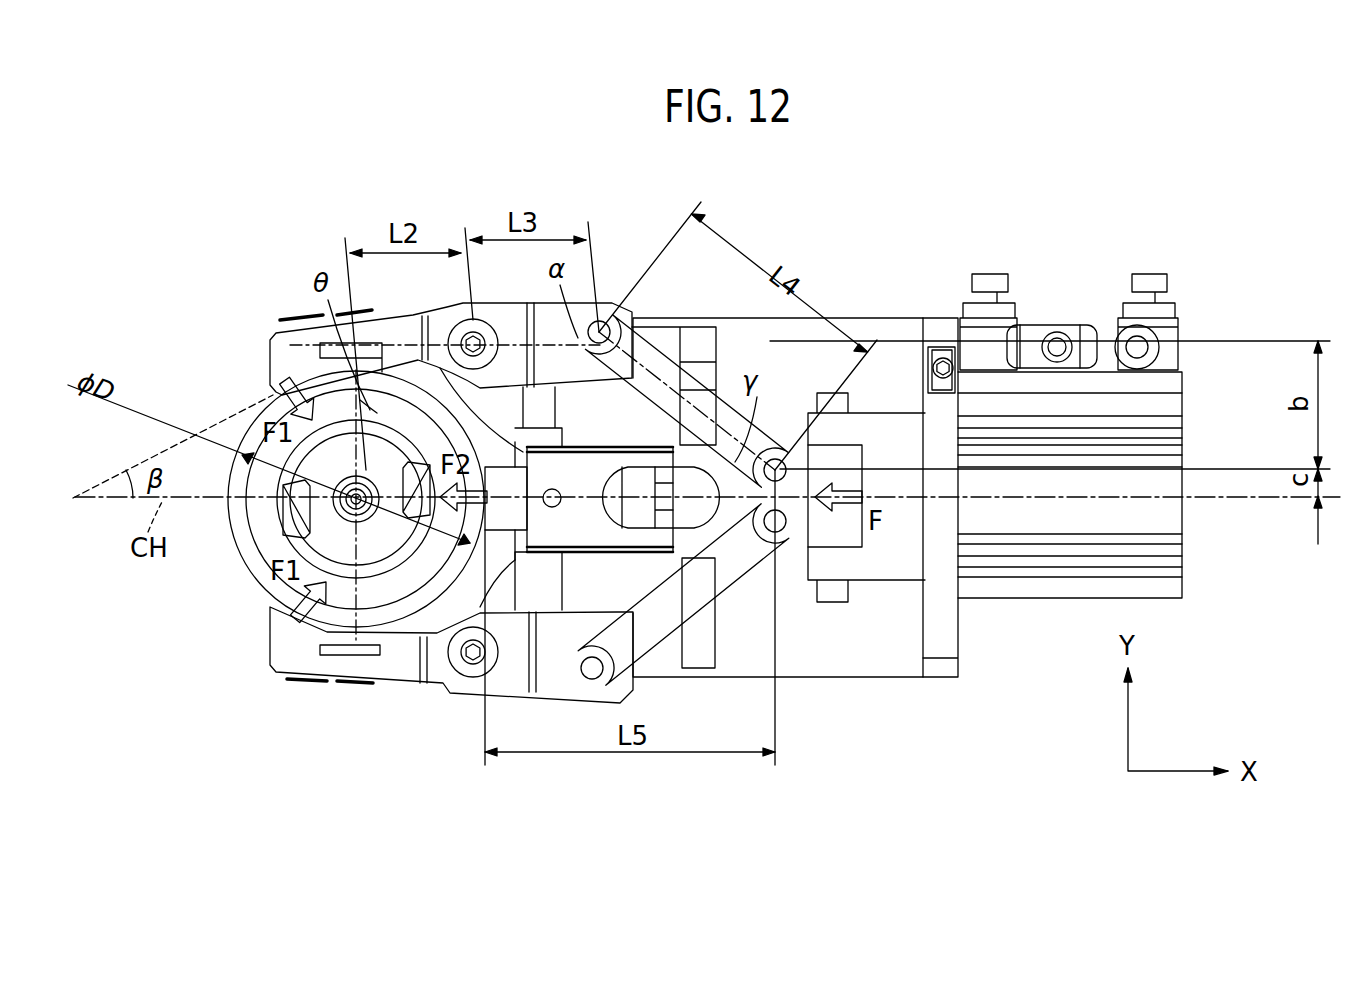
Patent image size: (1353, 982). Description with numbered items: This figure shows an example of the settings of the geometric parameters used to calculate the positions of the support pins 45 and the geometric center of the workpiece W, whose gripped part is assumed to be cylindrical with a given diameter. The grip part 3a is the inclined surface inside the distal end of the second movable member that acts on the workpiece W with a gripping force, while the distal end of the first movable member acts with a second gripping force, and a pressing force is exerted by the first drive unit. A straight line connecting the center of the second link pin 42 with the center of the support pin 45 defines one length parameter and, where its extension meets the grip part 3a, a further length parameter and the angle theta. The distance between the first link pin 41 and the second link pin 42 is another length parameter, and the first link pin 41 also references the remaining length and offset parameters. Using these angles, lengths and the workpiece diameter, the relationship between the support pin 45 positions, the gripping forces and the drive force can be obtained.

The grip part 3a is at (300, 362).
The first link pin 41 is at (802, 365).
The second link pin 42 is at (602, 322).
The support pin 45 is at (473, 330).
The workpiece W is at (243, 577).